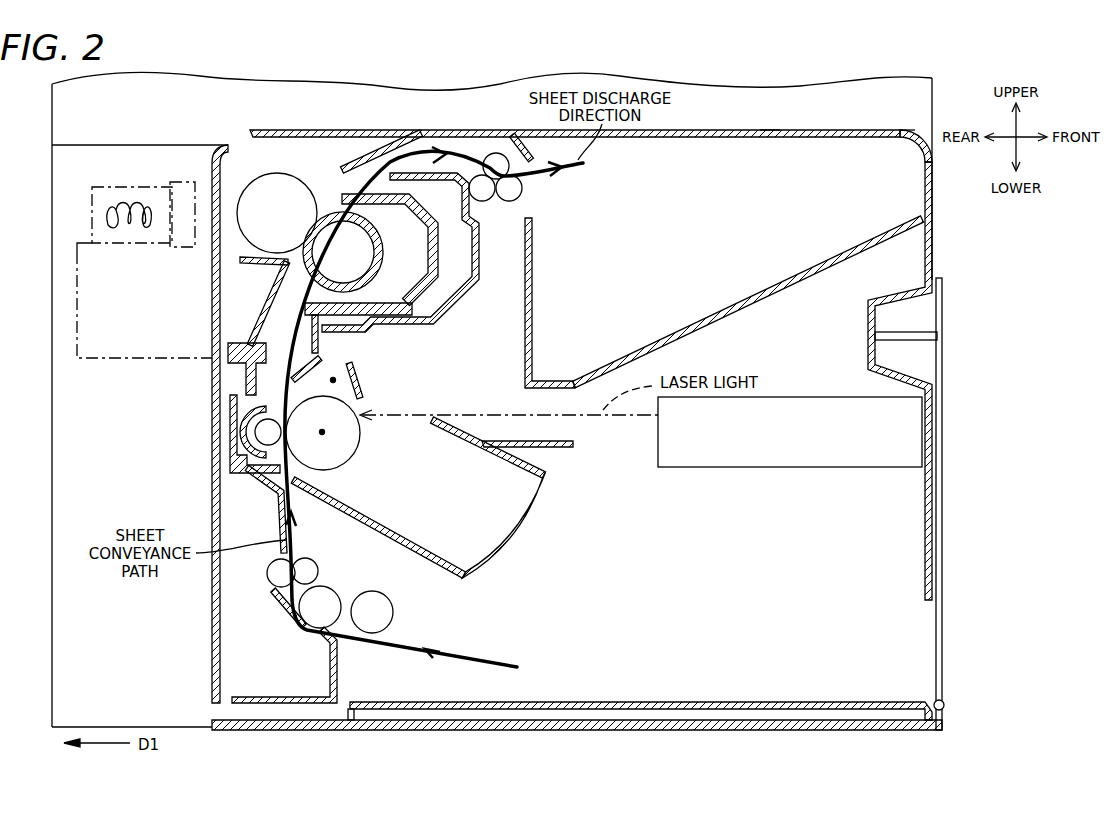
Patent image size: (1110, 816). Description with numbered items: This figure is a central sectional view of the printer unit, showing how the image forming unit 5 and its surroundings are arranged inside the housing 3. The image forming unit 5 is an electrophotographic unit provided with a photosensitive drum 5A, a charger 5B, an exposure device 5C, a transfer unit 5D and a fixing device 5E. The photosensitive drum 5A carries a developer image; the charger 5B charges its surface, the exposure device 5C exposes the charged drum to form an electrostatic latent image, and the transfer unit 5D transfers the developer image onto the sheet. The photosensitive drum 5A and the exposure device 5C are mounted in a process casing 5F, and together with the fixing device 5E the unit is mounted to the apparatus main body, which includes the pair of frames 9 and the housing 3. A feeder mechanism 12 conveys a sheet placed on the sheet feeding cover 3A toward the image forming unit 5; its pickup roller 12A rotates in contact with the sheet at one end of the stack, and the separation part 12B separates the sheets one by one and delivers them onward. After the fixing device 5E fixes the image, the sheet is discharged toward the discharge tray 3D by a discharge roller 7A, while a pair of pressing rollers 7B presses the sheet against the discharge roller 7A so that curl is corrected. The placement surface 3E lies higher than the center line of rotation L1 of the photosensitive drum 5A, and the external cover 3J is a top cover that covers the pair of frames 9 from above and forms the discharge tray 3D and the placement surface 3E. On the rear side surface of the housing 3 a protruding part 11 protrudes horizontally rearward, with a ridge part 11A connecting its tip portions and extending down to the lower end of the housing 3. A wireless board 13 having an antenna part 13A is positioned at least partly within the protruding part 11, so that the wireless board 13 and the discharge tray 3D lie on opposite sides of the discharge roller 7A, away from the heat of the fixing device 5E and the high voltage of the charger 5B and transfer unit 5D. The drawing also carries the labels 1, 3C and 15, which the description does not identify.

The image forming apparatus 1 is at (809, 207).
The housing 3 is at (690, 128).
The sheet feeding cover 3A is at (943, 552).
The sheet discharge portion 3C is at (632, 247).
The discharge tray 3D is at (690, 325).
The placement surface 3E is at (618, 362).
The external cover 3J is at (471, 130).
The image forming unit 5 is at (460, 364).
The photosensitive drum 5A is at (361, 446).
The charger 5B is at (332, 380).
The exposure device 5C is at (828, 452).
The transfer unit 5D is at (254, 431).
The fixing device 5E is at (310, 170).
The process casing 5F is at (528, 510).
The discharge roller 7A is at (494, 152).
The pair of pressing rollers 7B is at (480, 202).
The pair of frames 9 is at (70, 170).
The protruding part 11 is at (122, 160).
The ridge part 11A is at (772, 175).
The feeder mechanism 12 is at (302, 655).
The pickup roller 12A is at (395, 603).
The separation part 12B is at (292, 630).
The wireless board 13 is at (138, 185).
The antenna part 13A is at (108, 205).
The connector 15 is at (193, 181).
The center line of rotation L1 is at (323, 433).